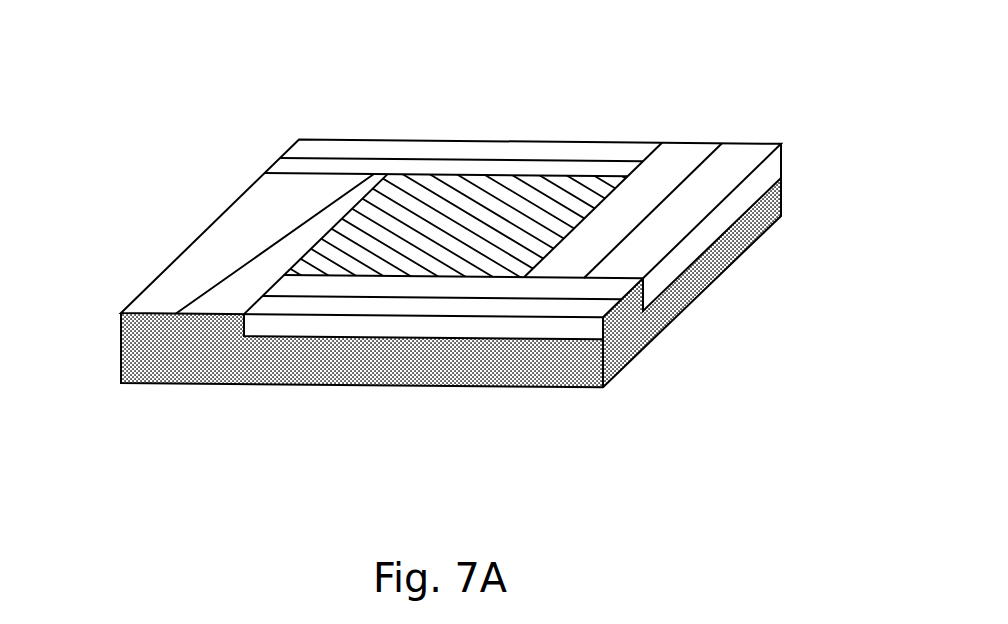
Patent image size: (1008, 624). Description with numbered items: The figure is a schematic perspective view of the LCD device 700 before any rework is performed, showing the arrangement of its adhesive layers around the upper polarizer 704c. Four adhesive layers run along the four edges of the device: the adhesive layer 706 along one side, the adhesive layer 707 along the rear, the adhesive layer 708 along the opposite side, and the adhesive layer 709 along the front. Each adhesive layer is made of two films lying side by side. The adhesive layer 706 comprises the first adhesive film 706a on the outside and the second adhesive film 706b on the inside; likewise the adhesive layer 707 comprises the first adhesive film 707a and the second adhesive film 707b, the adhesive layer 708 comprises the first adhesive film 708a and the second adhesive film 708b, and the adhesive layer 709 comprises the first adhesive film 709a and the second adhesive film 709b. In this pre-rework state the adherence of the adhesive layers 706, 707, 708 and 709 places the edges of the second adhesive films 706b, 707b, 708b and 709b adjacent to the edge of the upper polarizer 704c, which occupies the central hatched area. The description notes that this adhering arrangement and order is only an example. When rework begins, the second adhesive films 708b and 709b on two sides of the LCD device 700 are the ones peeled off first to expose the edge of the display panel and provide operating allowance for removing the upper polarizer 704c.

The LCD device 700 is at (263, 42).
The upper polarizer 704c is at (568, 197).
The adhesive layer 706 is at (209, 244).
The first adhesive film 706a is at (257, 208).
The second adhesive film 706b is at (268, 257).
The adhesive layer 707 is at (454, 101).
The first adhesive film 707a is at (447, 146).
The second adhesive film 707b is at (433, 80).
The adhesive layer 708 is at (706, 232).
The first adhesive film 708a is at (682, 207).
The second adhesive film 708b is at (594, 238).
The adhesive layer 709 is at (453, 395).
The first adhesive film 709a is at (378, 308).
The second adhesive film 709b is at (457, 288).